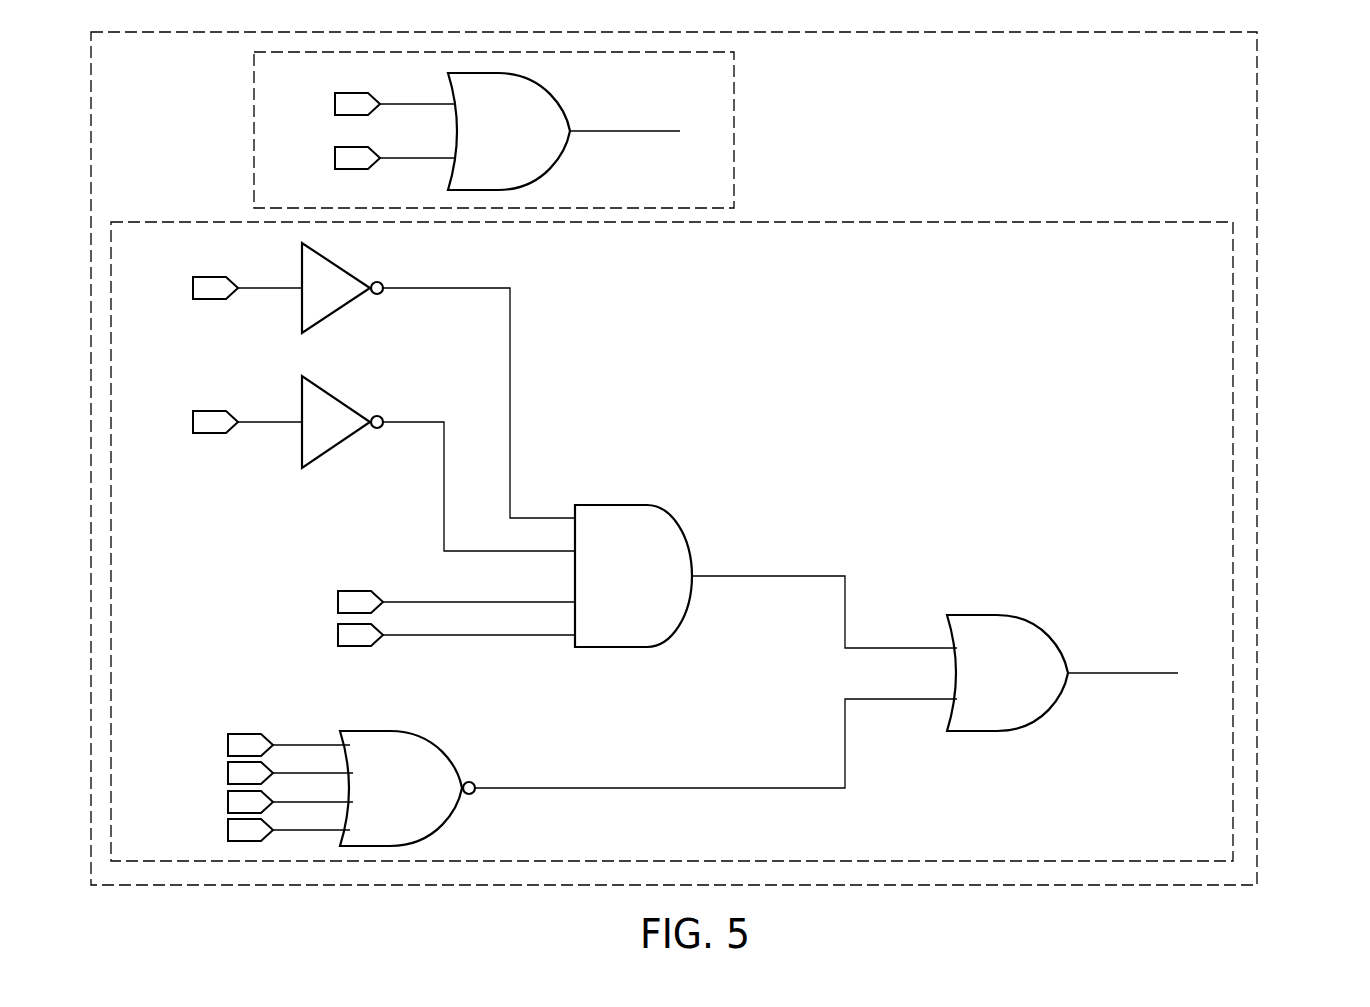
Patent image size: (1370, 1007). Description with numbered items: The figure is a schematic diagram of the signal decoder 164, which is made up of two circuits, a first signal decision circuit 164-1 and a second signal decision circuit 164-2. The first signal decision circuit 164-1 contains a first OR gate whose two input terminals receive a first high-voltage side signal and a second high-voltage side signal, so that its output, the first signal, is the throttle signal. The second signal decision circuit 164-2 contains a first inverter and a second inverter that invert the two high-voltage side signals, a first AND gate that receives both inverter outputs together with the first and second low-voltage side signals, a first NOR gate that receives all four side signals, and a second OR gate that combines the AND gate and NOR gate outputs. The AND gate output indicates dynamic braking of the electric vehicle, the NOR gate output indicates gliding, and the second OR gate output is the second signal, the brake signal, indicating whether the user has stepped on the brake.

The signal decoder 164 is at (1257, 172).
The first signal decision circuit 164-1 is at (734, 122).
The second signal decision circuit 164-2 is at (980, 222).